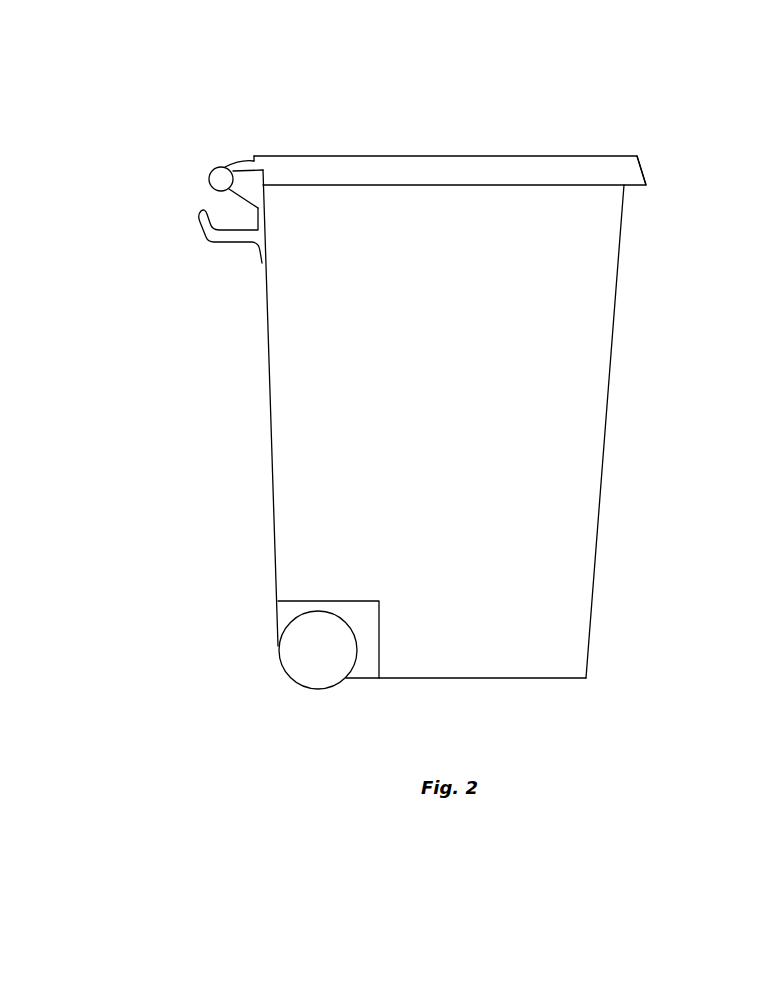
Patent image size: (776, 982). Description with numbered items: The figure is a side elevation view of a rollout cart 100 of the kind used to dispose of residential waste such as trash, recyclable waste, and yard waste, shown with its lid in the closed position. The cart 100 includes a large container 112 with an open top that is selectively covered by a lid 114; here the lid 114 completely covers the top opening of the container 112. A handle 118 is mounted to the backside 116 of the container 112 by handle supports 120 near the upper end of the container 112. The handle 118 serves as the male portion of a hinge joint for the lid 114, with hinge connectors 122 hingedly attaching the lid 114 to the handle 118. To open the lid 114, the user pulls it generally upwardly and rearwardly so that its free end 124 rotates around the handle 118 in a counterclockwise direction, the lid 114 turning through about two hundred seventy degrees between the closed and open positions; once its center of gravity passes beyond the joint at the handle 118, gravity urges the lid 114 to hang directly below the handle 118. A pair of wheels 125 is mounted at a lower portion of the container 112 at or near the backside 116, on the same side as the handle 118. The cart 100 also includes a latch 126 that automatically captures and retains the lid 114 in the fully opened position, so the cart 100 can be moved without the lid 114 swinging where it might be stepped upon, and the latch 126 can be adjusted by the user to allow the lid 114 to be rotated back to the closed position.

The rollout cart 100 is at (399, 114).
The container 112 is at (585, 355).
The lid 114 is at (553, 157).
The backside 116 is at (266, 357).
The handle 118 is at (218, 173).
The handle supports 120 is at (232, 191).
The hinge connectors 122 is at (245, 155).
The free end 124 is at (642, 168).
The wheels 125 is at (288, 648).
The latch 126 is at (237, 237).